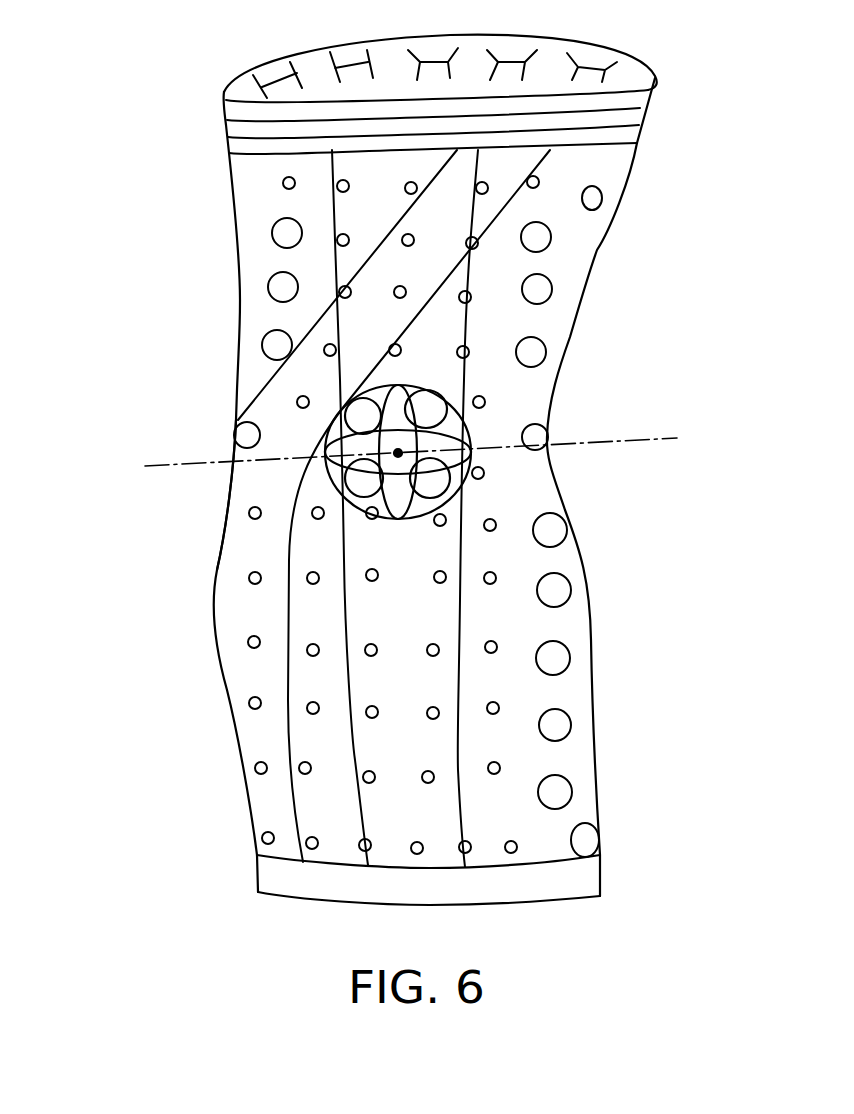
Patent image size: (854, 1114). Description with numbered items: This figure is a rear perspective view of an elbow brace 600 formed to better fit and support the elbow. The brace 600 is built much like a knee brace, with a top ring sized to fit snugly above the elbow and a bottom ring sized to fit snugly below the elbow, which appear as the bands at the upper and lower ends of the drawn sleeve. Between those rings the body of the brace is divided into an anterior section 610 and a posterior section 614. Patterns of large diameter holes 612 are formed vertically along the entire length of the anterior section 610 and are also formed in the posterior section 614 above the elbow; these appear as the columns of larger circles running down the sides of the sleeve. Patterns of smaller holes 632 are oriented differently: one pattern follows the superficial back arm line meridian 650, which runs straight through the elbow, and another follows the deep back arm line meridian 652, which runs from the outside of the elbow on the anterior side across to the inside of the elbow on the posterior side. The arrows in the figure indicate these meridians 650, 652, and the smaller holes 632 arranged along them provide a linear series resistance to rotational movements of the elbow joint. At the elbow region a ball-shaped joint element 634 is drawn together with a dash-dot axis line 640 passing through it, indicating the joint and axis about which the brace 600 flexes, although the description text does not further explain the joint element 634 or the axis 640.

The brace 600 is at (138, 58).
The anterior section 610 is at (615, 177).
The large diameter holes 612 is at (280, 233).
The posterior section 614 is at (250, 192).
The smaller holes 632 is at (253, 703).
The joint member 634 is at (398, 449).
The axis 640 is at (158, 465).
The superficial back arm line meridian 650 is at (384, 790).
The deep back arm line meridian 652 is at (236, 556).